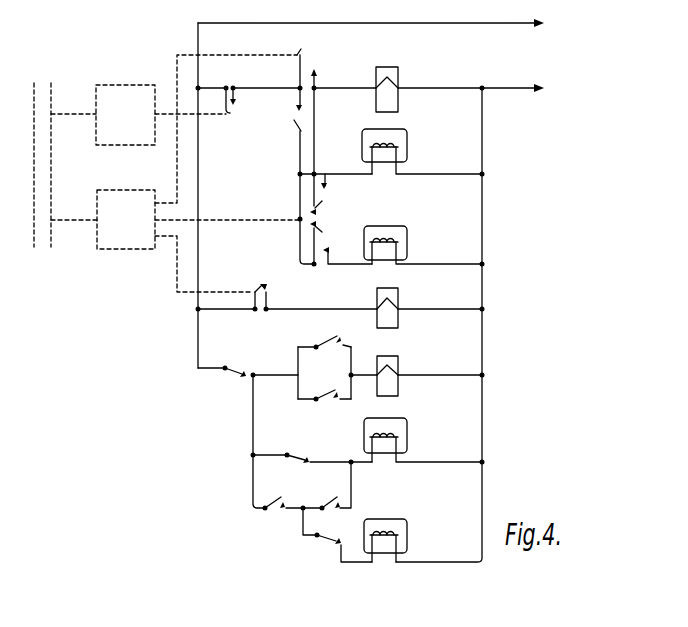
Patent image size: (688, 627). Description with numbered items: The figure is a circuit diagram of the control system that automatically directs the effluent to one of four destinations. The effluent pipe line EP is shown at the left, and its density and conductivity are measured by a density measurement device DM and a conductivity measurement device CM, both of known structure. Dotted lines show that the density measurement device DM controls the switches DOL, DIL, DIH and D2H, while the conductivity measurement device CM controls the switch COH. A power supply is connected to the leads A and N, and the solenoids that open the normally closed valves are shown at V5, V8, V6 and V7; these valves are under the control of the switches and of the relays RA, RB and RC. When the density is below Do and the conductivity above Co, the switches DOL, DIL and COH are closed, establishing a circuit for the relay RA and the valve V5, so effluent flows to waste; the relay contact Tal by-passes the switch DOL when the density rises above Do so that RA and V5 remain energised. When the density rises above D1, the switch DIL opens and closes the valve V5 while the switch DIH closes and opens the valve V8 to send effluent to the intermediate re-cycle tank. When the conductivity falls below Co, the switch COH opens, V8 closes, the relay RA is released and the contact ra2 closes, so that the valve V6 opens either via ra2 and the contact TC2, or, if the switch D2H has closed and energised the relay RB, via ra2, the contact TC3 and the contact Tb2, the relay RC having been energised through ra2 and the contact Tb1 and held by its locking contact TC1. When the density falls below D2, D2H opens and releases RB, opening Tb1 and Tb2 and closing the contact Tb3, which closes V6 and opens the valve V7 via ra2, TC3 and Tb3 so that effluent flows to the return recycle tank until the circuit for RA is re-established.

The lead A is at (550, 21).
The lead N is at (549, 88).
The effluent pipe line EP is at (58, 89).
The conductivity measurement device CM is at (161, 115).
The density measurement device DM is at (200, 173).
The switch COH is at (225, 114).
The switch DOL is at (318, 72).
The relay contact Tal is at (292, 190).
The relay RA is at (390, 77).
The switch DIL is at (336, 142).
The switch DIH is at (341, 242).
The solenoid valve V5 is at (422, 142).
The solenoid valve V8 is at (423, 238).
The switch D2H is at (249, 294).
The relay RB is at (374, 304).
The relay contact ra2 is at (248, 428).
The locking contact TC1 is at (326, 362).
The relay contact Tb1 is at (324, 393).
The relay RC is at (416, 370).
The relay contact TC2 is at (312, 448).
The solenoid valve V6 is at (423, 437).
The relay contact TC3 is at (280, 496).
The relay contact Tb2 is at (326, 486).
The relay contact Tb3 is at (337, 536).
The solenoid valve V7 is at (397, 539).